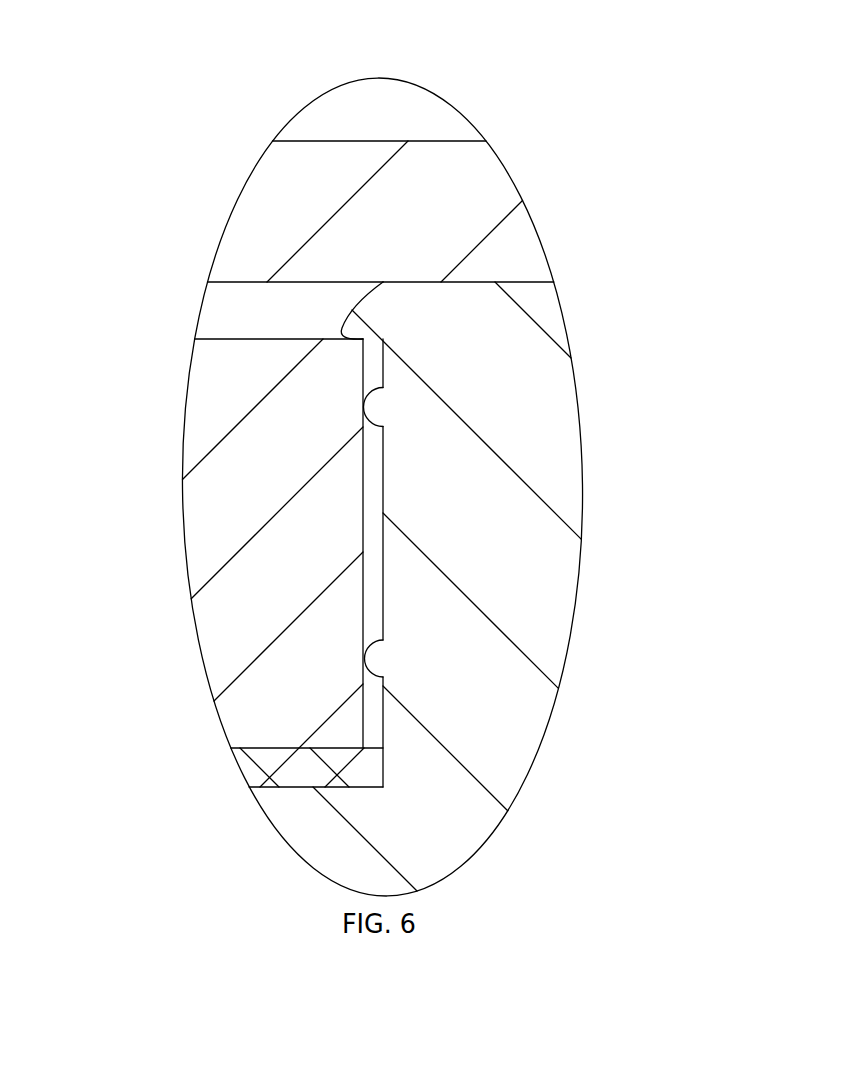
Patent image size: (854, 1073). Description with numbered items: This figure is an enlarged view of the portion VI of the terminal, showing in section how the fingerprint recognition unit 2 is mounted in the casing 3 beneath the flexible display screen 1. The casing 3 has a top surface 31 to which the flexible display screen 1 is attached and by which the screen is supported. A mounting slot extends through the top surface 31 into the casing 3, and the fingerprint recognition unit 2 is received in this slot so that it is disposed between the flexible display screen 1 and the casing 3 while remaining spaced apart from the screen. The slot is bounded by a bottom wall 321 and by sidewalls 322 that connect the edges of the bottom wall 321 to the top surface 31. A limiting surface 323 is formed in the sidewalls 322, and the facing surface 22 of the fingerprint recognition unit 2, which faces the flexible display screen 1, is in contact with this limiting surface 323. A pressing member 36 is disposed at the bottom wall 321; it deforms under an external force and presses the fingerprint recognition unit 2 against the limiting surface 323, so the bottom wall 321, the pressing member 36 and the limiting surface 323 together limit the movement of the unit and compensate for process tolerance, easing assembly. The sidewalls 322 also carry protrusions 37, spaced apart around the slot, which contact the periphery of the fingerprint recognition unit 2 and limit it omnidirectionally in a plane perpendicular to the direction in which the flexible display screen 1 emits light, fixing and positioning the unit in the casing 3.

The portion VI is at (383, 455).
The flexible display screen 1 is at (282, 188).
The facing surface 22 is at (260, 337).
The fingerprint recognition unit 2 is at (225, 515).
The casing 3 is at (533, 368).
The top surface 31 is at (470, 282).
The limiting surface 323 is at (386, 347).
The sidewalls 322 is at (387, 476).
The protrusions 37 is at (375, 655).
The pressing member 36 is at (293, 772).
The bottom wall 321 is at (297, 787).